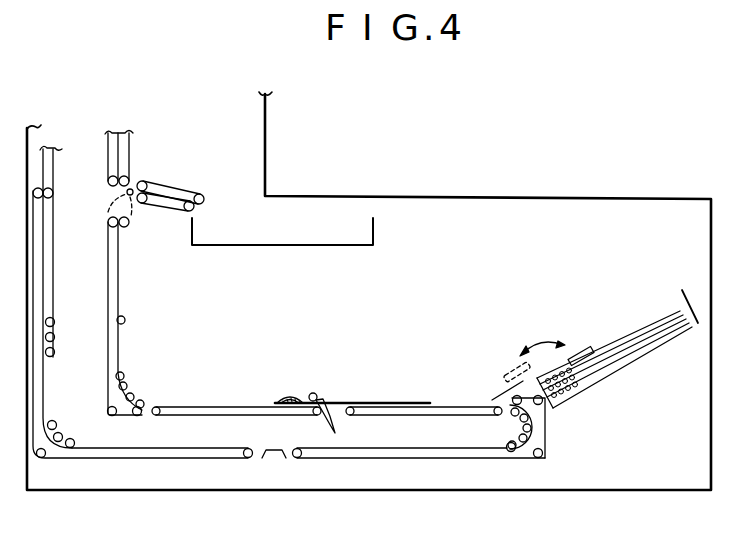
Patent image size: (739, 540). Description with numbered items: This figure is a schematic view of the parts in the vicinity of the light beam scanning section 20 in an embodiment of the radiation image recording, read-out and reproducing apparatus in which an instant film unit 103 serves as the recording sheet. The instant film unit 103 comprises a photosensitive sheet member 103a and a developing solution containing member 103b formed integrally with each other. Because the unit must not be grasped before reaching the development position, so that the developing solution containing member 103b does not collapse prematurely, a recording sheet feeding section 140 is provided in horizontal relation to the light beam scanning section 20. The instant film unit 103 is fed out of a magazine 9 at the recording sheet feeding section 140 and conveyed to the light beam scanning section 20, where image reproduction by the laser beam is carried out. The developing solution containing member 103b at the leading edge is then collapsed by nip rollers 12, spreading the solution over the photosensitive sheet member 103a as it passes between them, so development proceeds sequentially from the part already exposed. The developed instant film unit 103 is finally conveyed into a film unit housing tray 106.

The magazine 9 is at (656, 352).
The nip rollers 12 is at (337, 420).
The light beam scanning section 20 is at (333, 401).
The instant film unit 103 is at (557, 334).
The photosensitive sheet member 103a is at (592, 335).
The developing solution containing member 103b is at (566, 352).
The film unit housing tray 106 is at (270, 245).
The recording sheet feeding section 140 is at (622, 378).